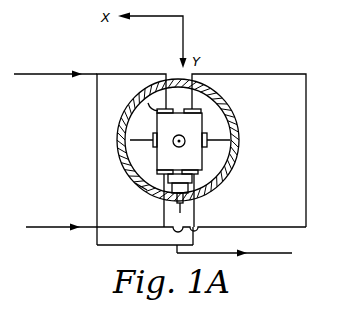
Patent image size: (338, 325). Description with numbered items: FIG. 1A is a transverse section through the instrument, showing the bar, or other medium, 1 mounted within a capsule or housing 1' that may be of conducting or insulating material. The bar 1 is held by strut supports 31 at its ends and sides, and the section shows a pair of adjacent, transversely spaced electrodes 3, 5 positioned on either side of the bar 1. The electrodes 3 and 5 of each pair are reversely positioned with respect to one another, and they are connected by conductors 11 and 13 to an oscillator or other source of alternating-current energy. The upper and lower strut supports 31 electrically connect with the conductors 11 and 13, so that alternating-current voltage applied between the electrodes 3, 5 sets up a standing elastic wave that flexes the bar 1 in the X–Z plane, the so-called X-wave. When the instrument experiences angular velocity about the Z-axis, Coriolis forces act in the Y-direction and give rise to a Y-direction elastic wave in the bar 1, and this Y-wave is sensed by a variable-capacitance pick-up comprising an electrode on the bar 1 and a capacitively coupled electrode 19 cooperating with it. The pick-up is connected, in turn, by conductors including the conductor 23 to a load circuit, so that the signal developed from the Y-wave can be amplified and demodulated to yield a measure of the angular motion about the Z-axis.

The bar 1 is at (175, 140).
The capsule or housing 1' is at (212, 118).
The electrode 3 is at (155, 107).
The electrode 5 is at (197, 110).
The conductor 11 is at (45, 75).
The conductor 13 is at (52, 228).
The capacitively coupled electrode 19 is at (203, 172).
The conductor 23 is at (257, 254).
The strut support 31 is at (220, 139).